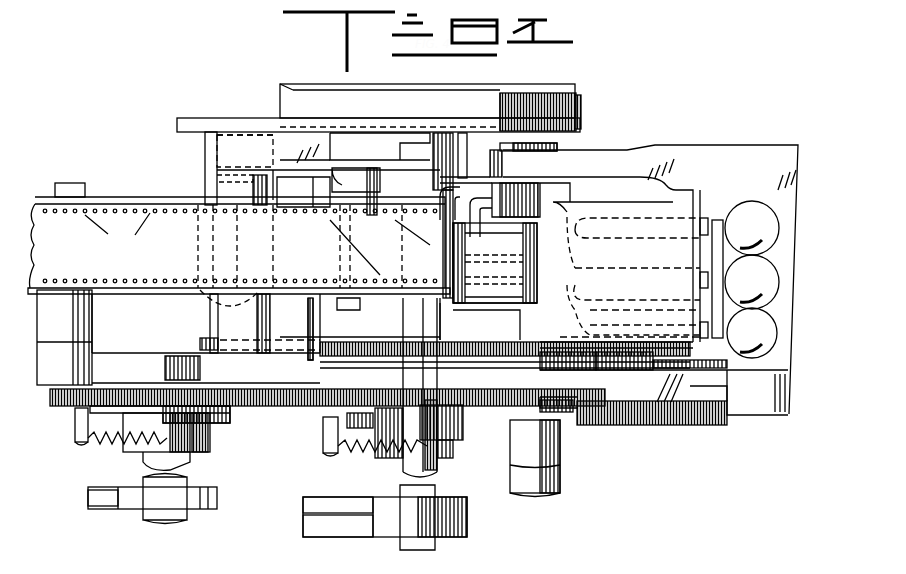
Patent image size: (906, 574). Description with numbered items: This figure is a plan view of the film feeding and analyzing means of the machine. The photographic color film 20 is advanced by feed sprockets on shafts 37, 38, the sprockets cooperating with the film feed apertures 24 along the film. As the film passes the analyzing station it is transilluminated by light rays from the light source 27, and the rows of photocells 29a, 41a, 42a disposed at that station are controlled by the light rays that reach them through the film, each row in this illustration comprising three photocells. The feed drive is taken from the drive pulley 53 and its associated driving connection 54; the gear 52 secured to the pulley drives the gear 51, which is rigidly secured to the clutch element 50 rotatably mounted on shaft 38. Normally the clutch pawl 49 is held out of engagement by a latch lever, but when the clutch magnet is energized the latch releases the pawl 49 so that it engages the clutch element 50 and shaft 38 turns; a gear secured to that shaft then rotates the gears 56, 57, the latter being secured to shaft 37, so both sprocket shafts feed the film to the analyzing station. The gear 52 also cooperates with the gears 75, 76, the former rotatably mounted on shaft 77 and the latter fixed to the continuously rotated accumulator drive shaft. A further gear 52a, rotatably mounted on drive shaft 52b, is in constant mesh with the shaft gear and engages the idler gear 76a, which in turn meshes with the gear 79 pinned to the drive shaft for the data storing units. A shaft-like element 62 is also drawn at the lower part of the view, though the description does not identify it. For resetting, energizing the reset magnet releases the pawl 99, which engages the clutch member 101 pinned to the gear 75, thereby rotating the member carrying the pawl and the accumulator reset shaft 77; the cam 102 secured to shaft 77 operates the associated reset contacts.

The photographic color film 20 is at (137, 233).
The film feed apertures 24 is at (98, 200).
The light source 27 is at (210, 188).
The row of photocells 29a is at (740, 338).
The shaft 37 is at (412, 318).
The shaft 38 is at (436, 468).
The row of photocells 41a is at (742, 292).
The row of photocells 42a is at (745, 230).
The clutch pawl 49 is at (322, 428).
The clutch element 50 is at (360, 448).
The gear 51 is at (488, 428).
The gear 52 is at (568, 435).
The gear 52a is at (578, 372).
The drive shaft 52b is at (580, 312).
The drive pulley 53 is at (530, 88).
The driving connection 54 is at (581, 114).
The gear 56 is at (203, 342).
The gear 57 is at (483, 345).
The shaft 62 is at (468, 518).
The gear 75 is at (62, 406).
The gear 76 is at (625, 428).
The idler gear 76a is at (621, 373).
The shaft 77 is at (185, 470).
The gear 79 is at (712, 428).
The pawl 99 is at (76, 418).
The clutch member 101 is at (125, 430).
The cam 102 is at (205, 508).